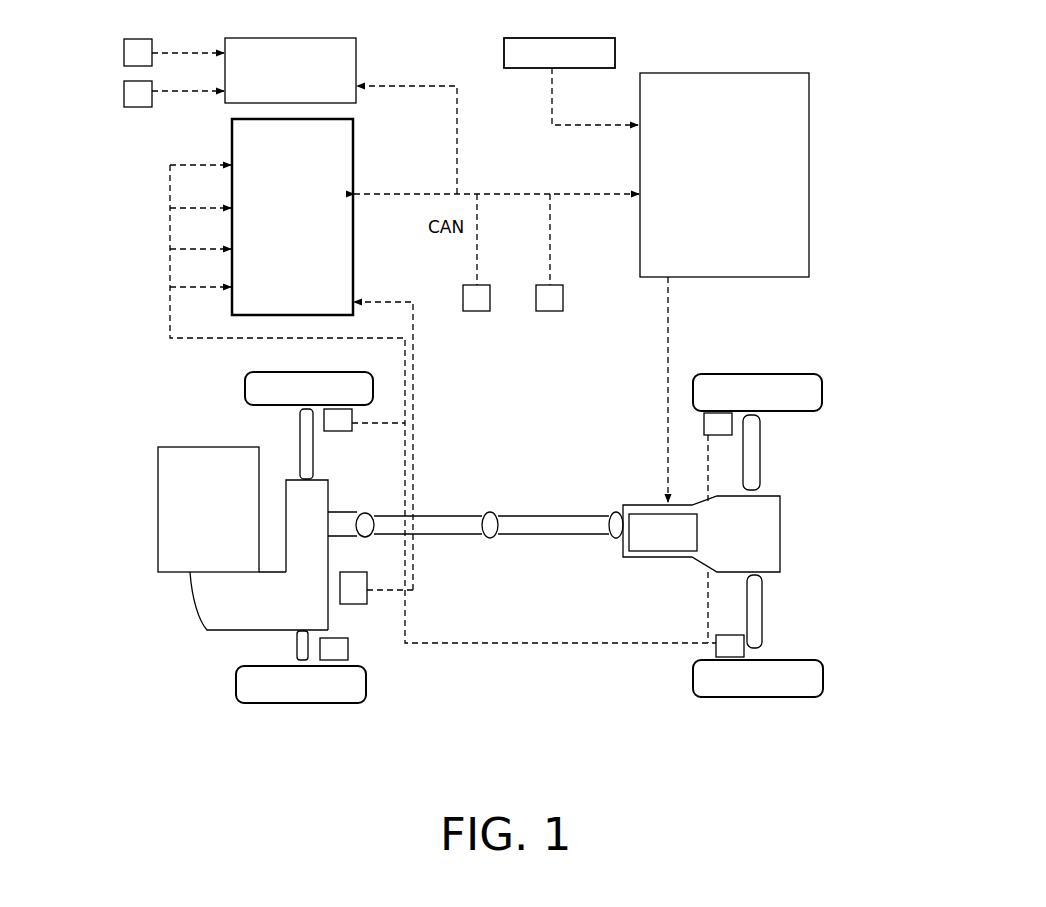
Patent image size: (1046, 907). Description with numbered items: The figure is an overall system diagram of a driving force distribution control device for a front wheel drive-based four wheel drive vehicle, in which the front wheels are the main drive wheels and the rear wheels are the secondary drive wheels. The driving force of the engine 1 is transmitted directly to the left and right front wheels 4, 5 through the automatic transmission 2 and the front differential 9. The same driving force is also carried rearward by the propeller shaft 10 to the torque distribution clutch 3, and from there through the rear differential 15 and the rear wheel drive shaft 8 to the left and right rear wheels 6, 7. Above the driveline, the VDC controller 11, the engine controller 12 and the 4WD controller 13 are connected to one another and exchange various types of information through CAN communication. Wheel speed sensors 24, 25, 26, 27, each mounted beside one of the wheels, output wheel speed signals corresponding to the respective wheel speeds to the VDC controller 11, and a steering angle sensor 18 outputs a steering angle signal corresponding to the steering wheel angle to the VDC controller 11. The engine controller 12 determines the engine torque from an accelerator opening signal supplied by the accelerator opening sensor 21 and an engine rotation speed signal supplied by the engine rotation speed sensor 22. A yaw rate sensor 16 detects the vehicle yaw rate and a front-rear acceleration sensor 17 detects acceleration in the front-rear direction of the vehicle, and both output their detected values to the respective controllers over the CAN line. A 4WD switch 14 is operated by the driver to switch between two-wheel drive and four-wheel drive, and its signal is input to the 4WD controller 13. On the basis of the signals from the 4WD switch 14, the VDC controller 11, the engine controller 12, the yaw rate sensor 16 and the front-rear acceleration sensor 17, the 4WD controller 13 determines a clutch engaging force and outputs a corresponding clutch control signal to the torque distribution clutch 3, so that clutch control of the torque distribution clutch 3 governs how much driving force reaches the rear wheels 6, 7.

The engine 1 is at (158, 515).
The automatic transmission 2 is at (197, 608).
The torque distribution clutch 3 is at (633, 552).
The left front wheel 4 is at (245, 392).
The right front wheel 5 is at (236, 684).
The left rear wheel 6 is at (822, 400).
The right rear wheel 7 is at (823, 684).
The rear wheel drive shaft 8 is at (760, 465).
The front differential 9 is at (286, 490).
The propeller shaft 10 is at (442, 535).
The VDC controller 11 is at (353, 169).
The engine controller 12 is at (356, 63).
The 4WD controller 13 is at (809, 213).
The 4WD switch 14 is at (615, 57).
The rear differential 15 is at (780, 525).
The yaw rate sensor 16 is at (480, 311).
The front-rear acceleration sensor 17 is at (553, 311).
The steering angle sensor 18 is at (367, 597).
The accelerator opening sensor 21 is at (124, 58).
The engine rotation speed sensor 22 is at (124, 101).
The wheel speed sensor 24 is at (335, 432).
The wheel speed sensor 25 is at (348, 650).
The wheel speed sensor 26 is at (704, 425).
The wheel speed sensor 27 is at (716, 652).